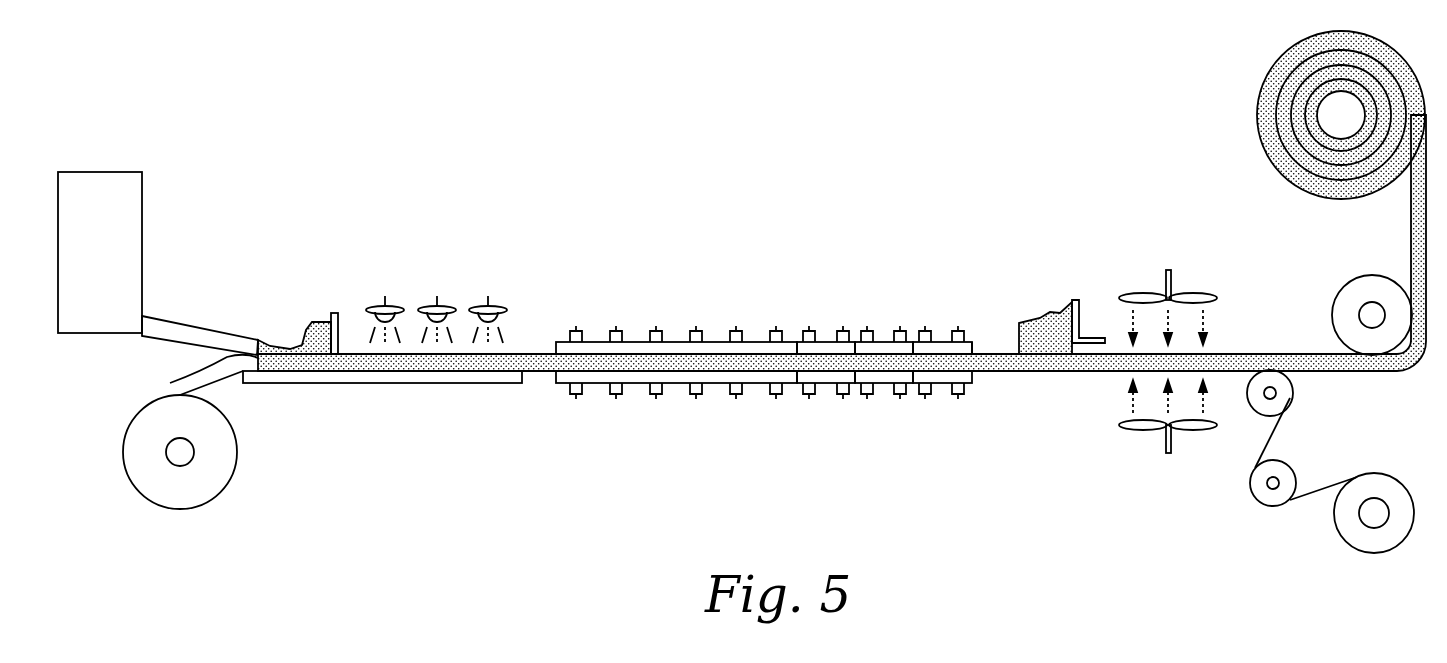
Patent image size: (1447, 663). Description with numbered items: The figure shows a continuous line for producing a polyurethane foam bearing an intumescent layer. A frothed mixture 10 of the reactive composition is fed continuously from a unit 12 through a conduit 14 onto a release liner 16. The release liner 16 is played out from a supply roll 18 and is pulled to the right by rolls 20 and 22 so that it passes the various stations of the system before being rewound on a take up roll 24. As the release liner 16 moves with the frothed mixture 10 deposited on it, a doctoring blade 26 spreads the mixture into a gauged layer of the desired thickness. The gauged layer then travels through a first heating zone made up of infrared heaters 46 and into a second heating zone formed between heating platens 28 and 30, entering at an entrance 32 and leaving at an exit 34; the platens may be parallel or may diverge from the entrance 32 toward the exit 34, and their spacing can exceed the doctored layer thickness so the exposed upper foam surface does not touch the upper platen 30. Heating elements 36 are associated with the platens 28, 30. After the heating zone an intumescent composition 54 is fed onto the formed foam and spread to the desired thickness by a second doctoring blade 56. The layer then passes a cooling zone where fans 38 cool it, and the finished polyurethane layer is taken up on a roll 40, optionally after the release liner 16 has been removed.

The frothed mixture 10 is at (302, 335).
The unit 12 is at (123, 213).
The conduit 14 is at (172, 328).
The release liner 16 is at (183, 379).
The supply roll 18 is at (170, 490).
The roll 20 is at (1285, 393).
The roll 22 is at (1265, 493).
The take up roll 24 is at (1365, 545).
The doctoring blade 26 is at (341, 332).
The heating platen 28 is at (718, 380).
The heating platen 30 is at (722, 348).
The entrance 32 is at (553, 374).
The exit 34 is at (976, 349).
The heating elements 36 is at (843, 338).
The fans 38 is at (1200, 300).
The roll 40 is at (1277, 70).
The infrared heaters 46 is at (398, 305).
The intumescent composition 54 is at (1050, 335).
The doctoring blade 56 is at (1080, 323).